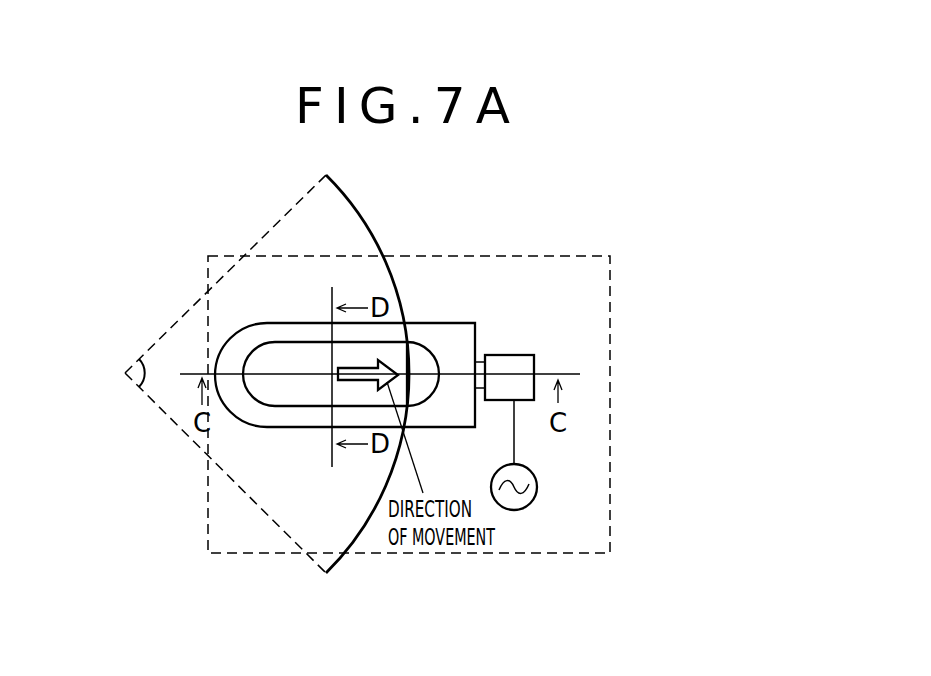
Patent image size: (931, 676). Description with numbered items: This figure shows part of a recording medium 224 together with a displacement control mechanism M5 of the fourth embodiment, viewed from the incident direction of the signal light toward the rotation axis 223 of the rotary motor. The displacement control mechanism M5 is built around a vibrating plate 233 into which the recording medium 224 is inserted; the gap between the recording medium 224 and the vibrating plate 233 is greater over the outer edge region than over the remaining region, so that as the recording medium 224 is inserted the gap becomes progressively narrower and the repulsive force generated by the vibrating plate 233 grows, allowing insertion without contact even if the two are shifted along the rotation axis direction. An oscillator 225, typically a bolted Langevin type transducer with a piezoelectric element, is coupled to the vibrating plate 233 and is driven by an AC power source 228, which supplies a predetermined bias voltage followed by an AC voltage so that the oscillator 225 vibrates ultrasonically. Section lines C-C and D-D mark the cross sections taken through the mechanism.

The displacement control mechanism M5 is at (603, 255).
The rotation axis 223 is at (143, 352).
The recording medium 224 is at (348, 222).
The vibrating plate 233 is at (424, 323).
The oscillator 225 is at (510, 355).
The AC power source 228 is at (538, 493).